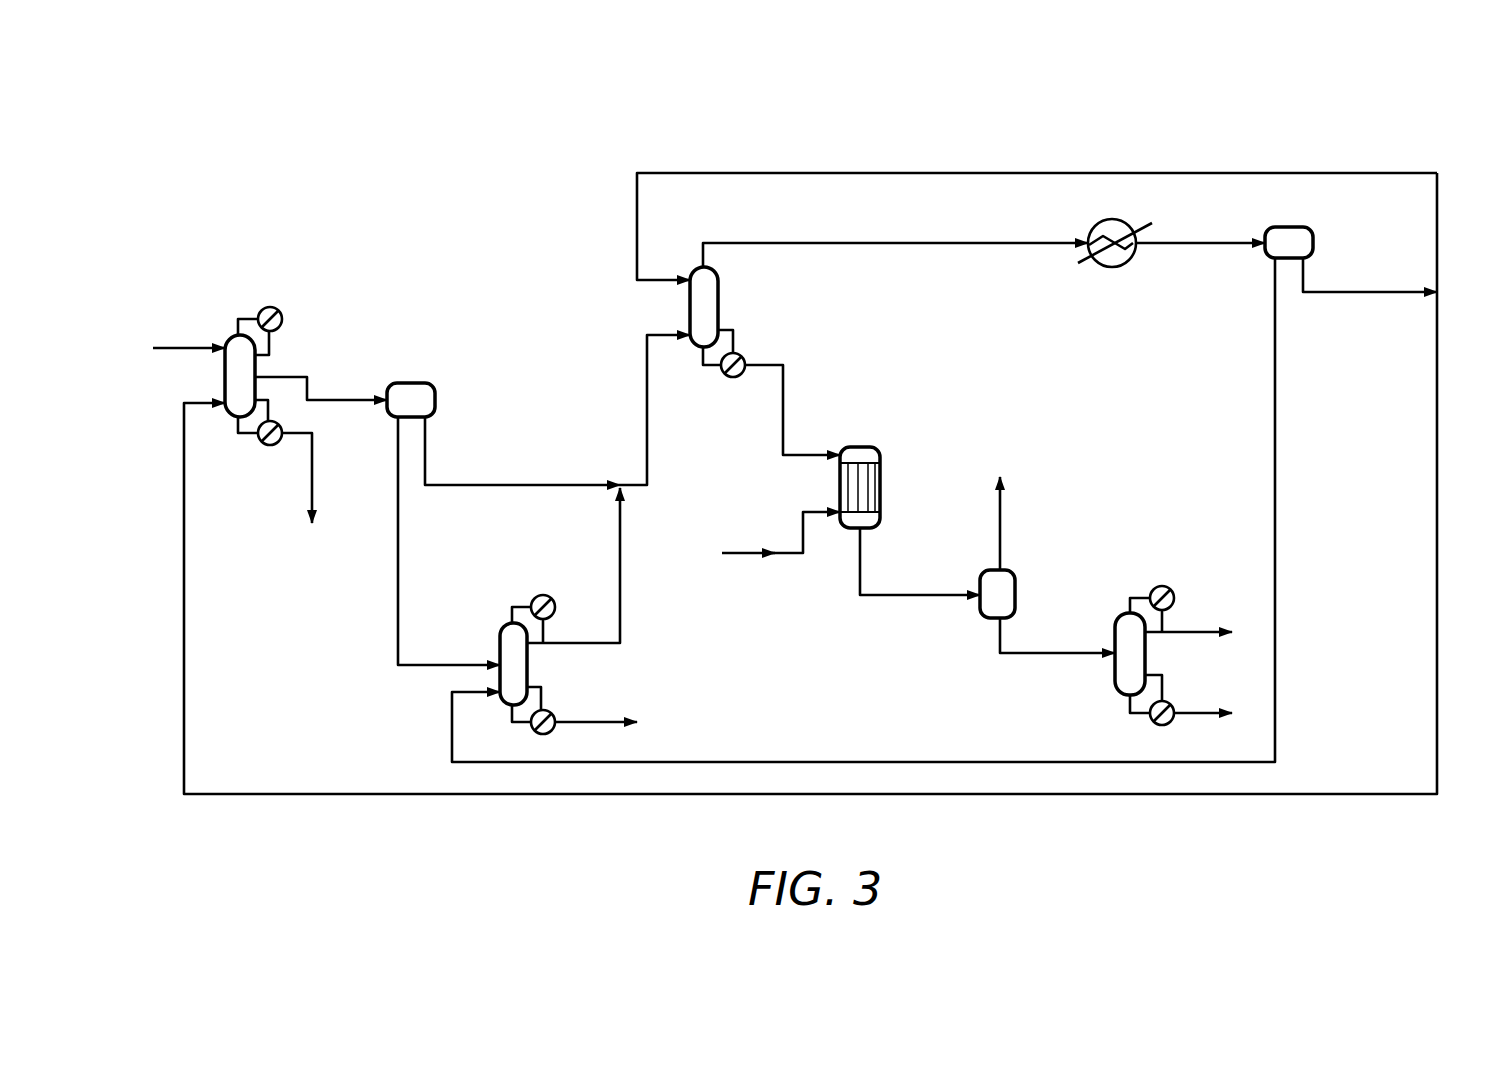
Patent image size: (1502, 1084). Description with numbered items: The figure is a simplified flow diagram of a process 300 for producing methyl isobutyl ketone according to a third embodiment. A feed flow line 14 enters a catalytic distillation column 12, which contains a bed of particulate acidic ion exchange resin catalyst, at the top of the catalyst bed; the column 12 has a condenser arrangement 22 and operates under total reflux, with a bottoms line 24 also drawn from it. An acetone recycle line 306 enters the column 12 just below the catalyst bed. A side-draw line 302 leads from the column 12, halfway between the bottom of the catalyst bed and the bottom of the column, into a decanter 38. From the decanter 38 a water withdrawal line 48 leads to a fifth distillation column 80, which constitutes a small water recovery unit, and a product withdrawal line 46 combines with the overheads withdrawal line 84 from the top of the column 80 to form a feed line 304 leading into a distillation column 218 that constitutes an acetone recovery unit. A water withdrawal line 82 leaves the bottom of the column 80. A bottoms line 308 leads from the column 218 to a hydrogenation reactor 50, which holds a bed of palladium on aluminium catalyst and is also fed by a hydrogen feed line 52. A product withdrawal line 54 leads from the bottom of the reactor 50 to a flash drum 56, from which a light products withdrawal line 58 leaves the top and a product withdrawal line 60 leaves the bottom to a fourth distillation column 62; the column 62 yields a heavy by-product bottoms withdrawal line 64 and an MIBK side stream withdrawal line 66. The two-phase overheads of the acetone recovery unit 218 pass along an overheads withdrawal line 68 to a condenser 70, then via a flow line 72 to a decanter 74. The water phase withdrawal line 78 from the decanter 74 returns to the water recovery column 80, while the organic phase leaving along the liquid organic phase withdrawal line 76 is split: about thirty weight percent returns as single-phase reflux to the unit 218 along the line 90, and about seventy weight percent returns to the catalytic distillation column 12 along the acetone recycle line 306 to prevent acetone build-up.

The process 300 is at (893, 157).
The acetone recycle line 306 is at (182, 748).
The reflux line 90 is at (1215, 172).
The feed flow line 14 is at (203, 347).
The catalytic distillation column 12 is at (240, 378).
The condenser arrangement 22 is at (258, 308).
The side-draw line 302 is at (320, 400).
The decanter 38 is at (410, 393).
The bottoms outlet line 24 is at (312, 468).
The product withdrawal line 46 is at (427, 457).
The water withdrawal line 48 is at (398, 522).
The feed line 304 is at (643, 432).
The overheads withdrawal line 84 is at (617, 573).
The fifth distillation column 80 is at (513, 653).
The water phase withdrawal line 78 is at (452, 748).
The water withdrawal line 82 is at (575, 727).
The distillation column 218 is at (705, 305).
The overheads withdrawal line 68 is at (968, 244).
The condenser 70 is at (1098, 267).
The flow line 72 is at (1148, 248).
The decanter 74 is at (1290, 243).
The liquid organic phase withdrawal line 76 is at (1385, 296).
The bottoms line 308 is at (790, 410).
The hydrogenation reactor 50 is at (858, 462).
The hydrogen feed line 52 is at (788, 556).
The product withdrawal line 54 is at (930, 597).
The flash drum 56 is at (1002, 595).
The light products withdrawal line 58 is at (1002, 528).
The product withdrawal line 60 is at (1075, 655).
The fourth distillation column 62 is at (1137, 657).
The MIBK side stream withdrawal line 66 is at (1188, 627).
The heavy by-product bottoms withdrawal line 64 is at (1200, 713).